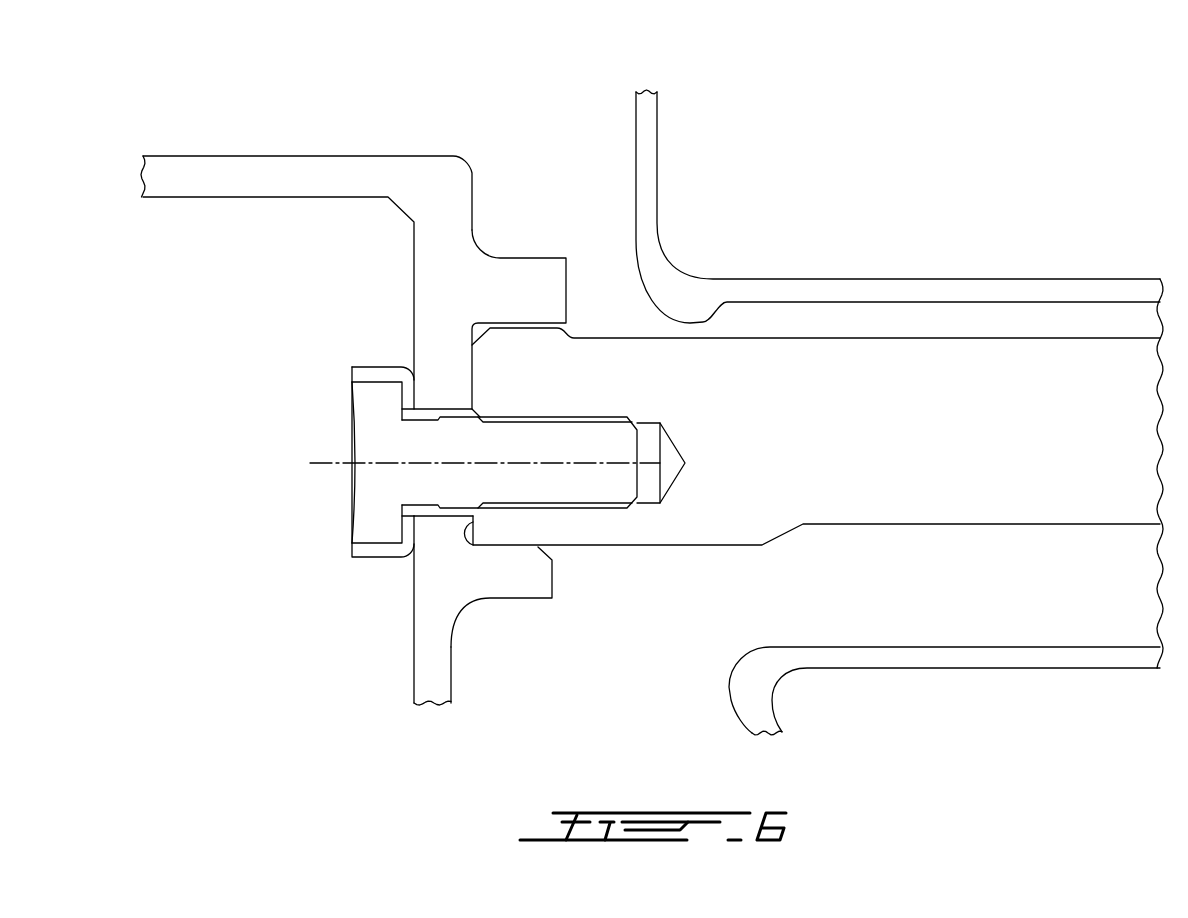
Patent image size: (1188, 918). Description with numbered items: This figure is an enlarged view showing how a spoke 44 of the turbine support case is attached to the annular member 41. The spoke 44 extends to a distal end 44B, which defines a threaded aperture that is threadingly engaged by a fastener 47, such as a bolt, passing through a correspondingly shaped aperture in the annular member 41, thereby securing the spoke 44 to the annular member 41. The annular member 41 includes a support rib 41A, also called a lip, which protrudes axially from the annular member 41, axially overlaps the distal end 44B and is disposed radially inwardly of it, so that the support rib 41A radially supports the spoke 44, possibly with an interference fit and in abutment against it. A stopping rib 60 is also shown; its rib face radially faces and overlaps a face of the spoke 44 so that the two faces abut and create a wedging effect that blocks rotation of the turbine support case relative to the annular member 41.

The annular member 41 is at (443, 267).
The support rib 41A is at (521, 577).
The stopping rib 60 is at (523, 285).
The spoke 44 is at (938, 410).
The distal end of spoke 44B is at (522, 390).
The fastener 47 is at (373, 514).